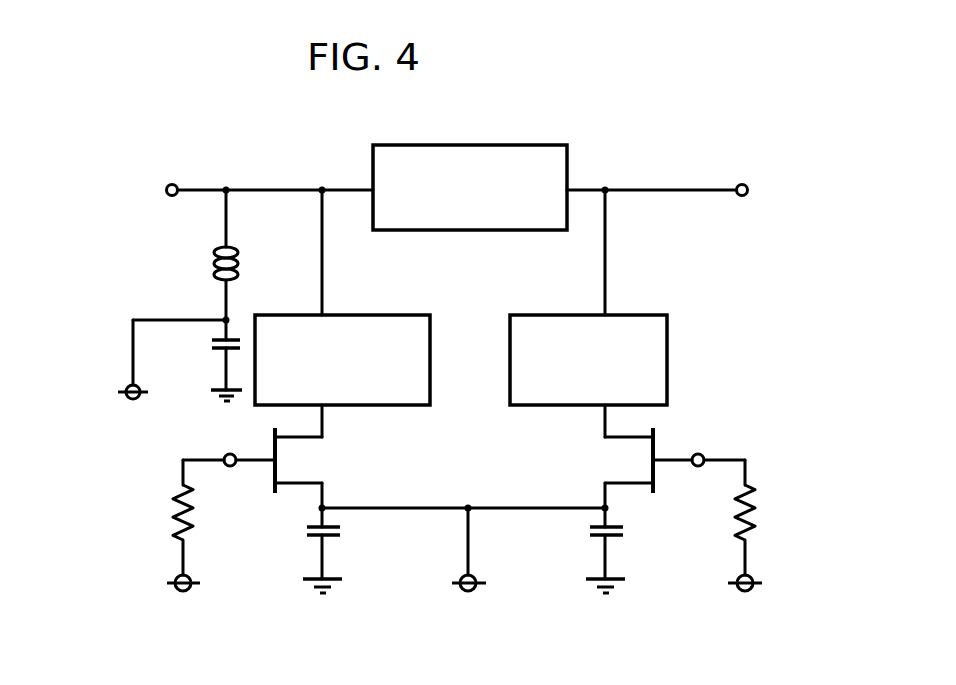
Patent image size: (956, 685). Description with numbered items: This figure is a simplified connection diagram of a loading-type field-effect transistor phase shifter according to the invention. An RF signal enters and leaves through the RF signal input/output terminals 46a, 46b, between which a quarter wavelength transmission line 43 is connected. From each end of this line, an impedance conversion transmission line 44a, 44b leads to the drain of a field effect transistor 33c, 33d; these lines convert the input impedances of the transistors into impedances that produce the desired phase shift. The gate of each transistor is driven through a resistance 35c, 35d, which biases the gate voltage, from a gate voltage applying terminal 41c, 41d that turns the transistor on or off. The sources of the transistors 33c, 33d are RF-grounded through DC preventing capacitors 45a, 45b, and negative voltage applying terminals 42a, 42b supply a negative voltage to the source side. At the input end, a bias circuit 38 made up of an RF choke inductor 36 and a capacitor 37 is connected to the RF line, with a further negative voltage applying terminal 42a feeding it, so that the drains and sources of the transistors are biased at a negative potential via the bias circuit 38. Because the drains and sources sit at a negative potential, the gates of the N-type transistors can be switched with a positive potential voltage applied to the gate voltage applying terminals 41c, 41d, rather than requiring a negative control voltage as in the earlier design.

The RF signal input/output terminal 46a is at (167, 184).
The RF signal input/output terminal 46b is at (748, 185).
The quarter wavelength transmission line 43 is at (527, 147).
The impedance conversion transmission line 44a is at (379, 314).
The impedance conversion transmission line 44b is at (660, 313).
The bias circuit 38 is at (90, 220).
The RF choke inductor 36 is at (208, 256).
The capacitor 37 is at (212, 335).
The negative voltage applying terminal 42a is at (130, 400).
The negative voltage applying terminal 42b is at (468, 592).
The field effect transistor 33c is at (263, 480).
The field effect transistor 33d is at (657, 445).
The resistance 35c is at (165, 506).
The resistance 35d is at (768, 503).
The gate voltage applying terminal 41c is at (167, 580).
The gate voltage applying terminal 41d is at (762, 582).
The DC preventing capacitor 45a is at (345, 535).
The DC preventing capacitor 45b is at (590, 531).